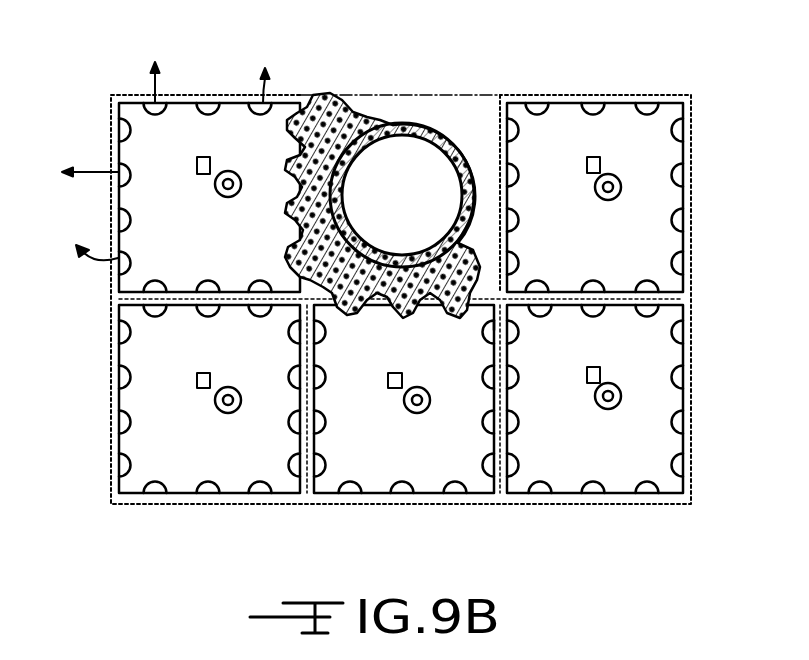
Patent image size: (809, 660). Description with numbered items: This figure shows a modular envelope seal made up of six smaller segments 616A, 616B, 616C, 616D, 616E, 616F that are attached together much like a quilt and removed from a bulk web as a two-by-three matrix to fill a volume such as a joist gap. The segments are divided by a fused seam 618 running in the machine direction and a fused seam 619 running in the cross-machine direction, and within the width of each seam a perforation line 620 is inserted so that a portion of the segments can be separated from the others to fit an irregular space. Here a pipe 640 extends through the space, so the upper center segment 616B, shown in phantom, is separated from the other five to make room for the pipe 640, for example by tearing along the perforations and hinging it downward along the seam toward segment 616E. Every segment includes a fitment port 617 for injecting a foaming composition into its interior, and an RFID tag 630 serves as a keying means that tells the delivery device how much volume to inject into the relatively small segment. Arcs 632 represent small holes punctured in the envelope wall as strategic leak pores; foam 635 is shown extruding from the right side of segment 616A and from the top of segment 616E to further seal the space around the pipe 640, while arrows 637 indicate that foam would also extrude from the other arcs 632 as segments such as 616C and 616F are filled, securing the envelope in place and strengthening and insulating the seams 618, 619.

The envelope segment 616A is at (224, 246).
The upper center envelope segment 616B is at (408, 100).
The envelope segment 616C is at (615, 253).
The envelope segment 616D is at (221, 451).
The envelope segment 616E is at (415, 459).
The envelope segment 616F is at (613, 452).
The fitment port 617 is at (216, 402).
The fused seam 618 is at (108, 299).
The fused seam 619 is at (483, 493).
The perforation line 620 is at (300, 358).
The RFID tag 630 is at (596, 154).
The arc 632 is at (118, 220).
The foam 635 is at (336, 104).
The arrow 637 is at (99, 168).
The pipe 640 is at (440, 130).